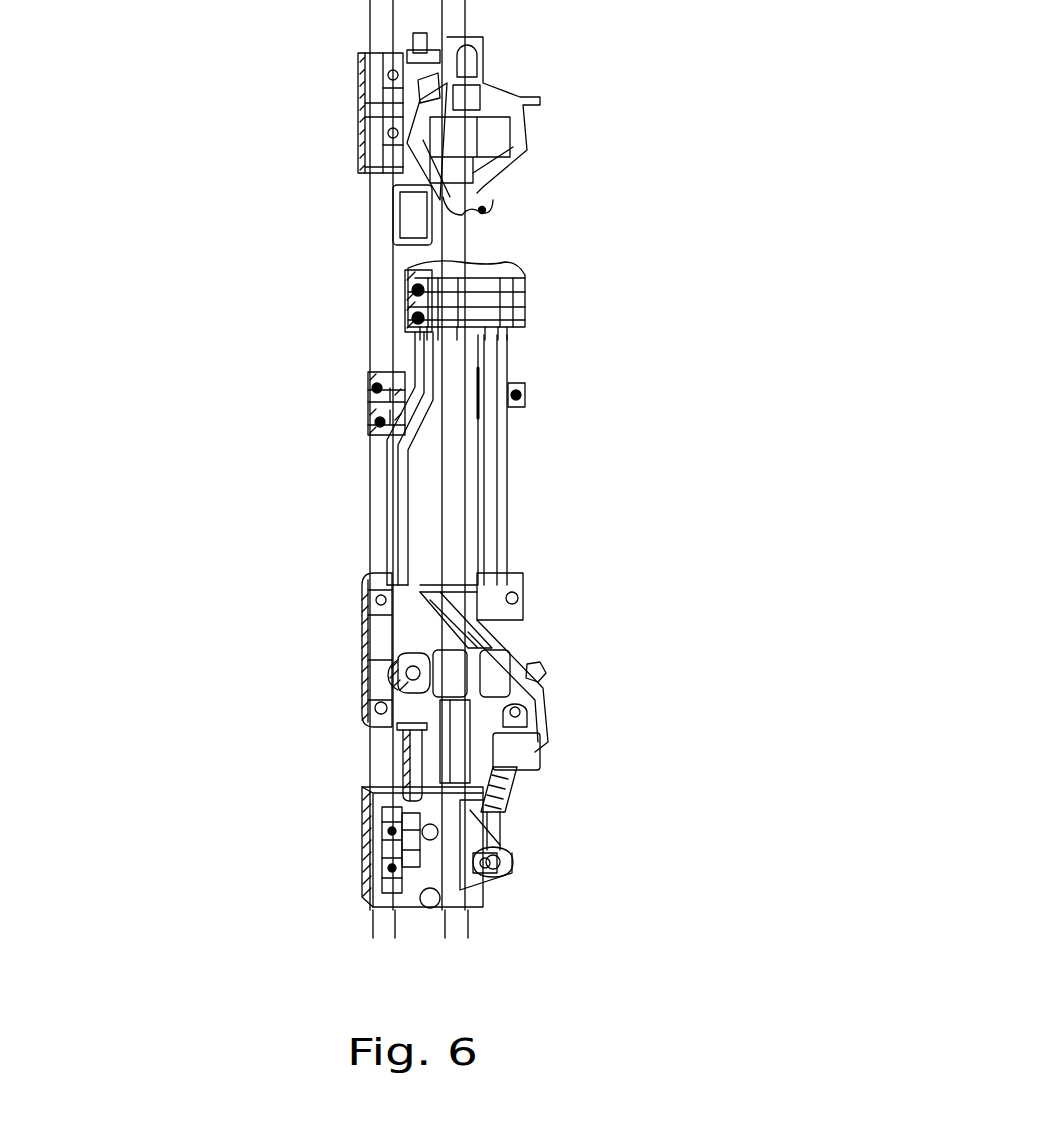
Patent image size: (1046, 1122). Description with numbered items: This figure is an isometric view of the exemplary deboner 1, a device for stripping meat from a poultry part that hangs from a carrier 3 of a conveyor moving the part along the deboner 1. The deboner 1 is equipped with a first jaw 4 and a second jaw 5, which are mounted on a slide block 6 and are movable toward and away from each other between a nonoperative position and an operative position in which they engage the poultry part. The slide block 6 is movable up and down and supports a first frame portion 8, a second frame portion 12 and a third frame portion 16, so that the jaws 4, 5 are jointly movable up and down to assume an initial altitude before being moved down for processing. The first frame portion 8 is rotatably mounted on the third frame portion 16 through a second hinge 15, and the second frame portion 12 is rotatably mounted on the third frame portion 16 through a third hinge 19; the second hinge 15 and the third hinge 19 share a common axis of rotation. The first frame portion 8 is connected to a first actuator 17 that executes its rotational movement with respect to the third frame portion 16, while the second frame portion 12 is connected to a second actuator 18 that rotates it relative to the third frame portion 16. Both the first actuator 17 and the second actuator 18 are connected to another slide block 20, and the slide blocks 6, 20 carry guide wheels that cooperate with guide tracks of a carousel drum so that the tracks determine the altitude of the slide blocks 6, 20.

The deboner 1 is at (268, 360).
The carrier 3 is at (530, 130).
The first jaw 4 is at (505, 265).
The second jaw 5 is at (405, 265).
The slide block 6 is at (362, 628).
The first frame portion 8 is at (500, 480).
The second frame portion 12 is at (390, 500).
The second hinge 15 is at (550, 663).
The third frame portion 16 is at (468, 612).
The first actuator 17 is at (518, 790).
The second actuator 18 is at (398, 768).
The third hinge 19 is at (393, 662).
The another slide block 20 is at (480, 905).